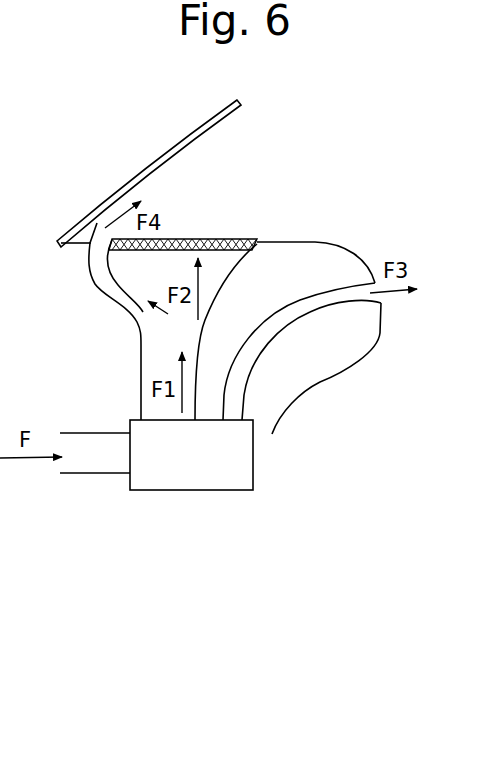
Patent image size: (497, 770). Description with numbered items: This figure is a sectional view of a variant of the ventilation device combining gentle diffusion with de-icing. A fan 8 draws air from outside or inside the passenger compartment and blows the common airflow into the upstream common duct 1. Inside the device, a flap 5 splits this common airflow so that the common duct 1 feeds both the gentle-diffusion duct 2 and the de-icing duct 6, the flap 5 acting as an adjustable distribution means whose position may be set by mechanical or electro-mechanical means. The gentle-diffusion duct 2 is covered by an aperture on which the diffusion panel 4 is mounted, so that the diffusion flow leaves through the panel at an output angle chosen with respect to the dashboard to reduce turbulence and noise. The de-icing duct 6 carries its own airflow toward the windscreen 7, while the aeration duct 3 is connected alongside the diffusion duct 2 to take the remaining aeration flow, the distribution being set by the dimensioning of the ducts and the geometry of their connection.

The common duct 1 is at (150, 361).
The gentle-diffusion duct 2 is at (183, 223).
The aeration duct 3 is at (318, 305).
The diffusion panel 4 is at (223, 240).
The flap 5 is at (134, 313).
The de-icing duct 6 is at (106, 283).
The windscreen 7 is at (150, 157).
The fan 8 is at (201, 490).